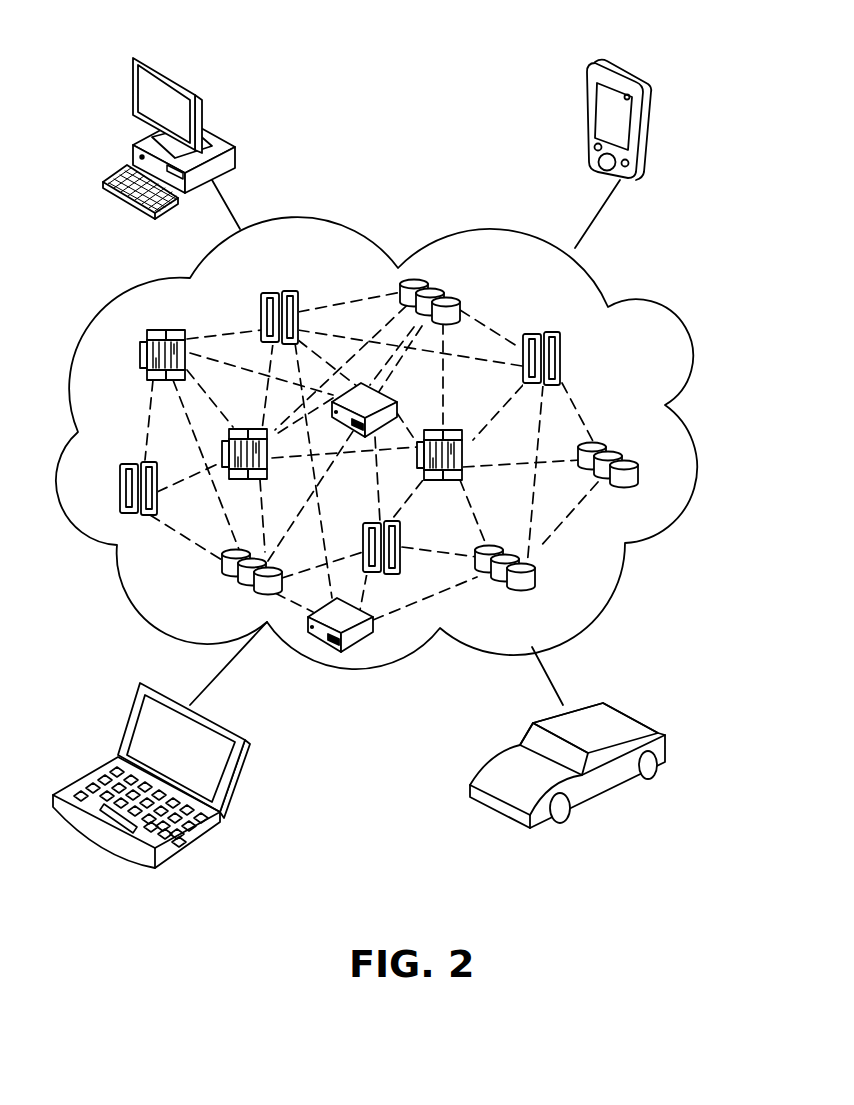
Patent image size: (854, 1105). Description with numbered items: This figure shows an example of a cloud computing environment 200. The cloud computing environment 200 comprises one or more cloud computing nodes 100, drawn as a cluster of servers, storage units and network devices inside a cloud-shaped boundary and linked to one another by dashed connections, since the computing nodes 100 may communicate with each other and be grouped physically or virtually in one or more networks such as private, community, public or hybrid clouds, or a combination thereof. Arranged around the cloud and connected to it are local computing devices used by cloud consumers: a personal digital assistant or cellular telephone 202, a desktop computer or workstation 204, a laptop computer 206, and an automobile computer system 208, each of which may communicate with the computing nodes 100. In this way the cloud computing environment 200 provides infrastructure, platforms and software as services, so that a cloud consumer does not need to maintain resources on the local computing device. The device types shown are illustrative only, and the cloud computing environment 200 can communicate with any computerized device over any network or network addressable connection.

The cloud computing environment 200 is at (392, 28).
The computing node 100 is at (620, 379).
The personal digital assistant (PDA) or cellular telephone 202 is at (587, 81).
The desktop computer 204 is at (203, 113).
The laptop computer 206 is at (247, 752).
The automobile computer system 208 is at (667, 758).